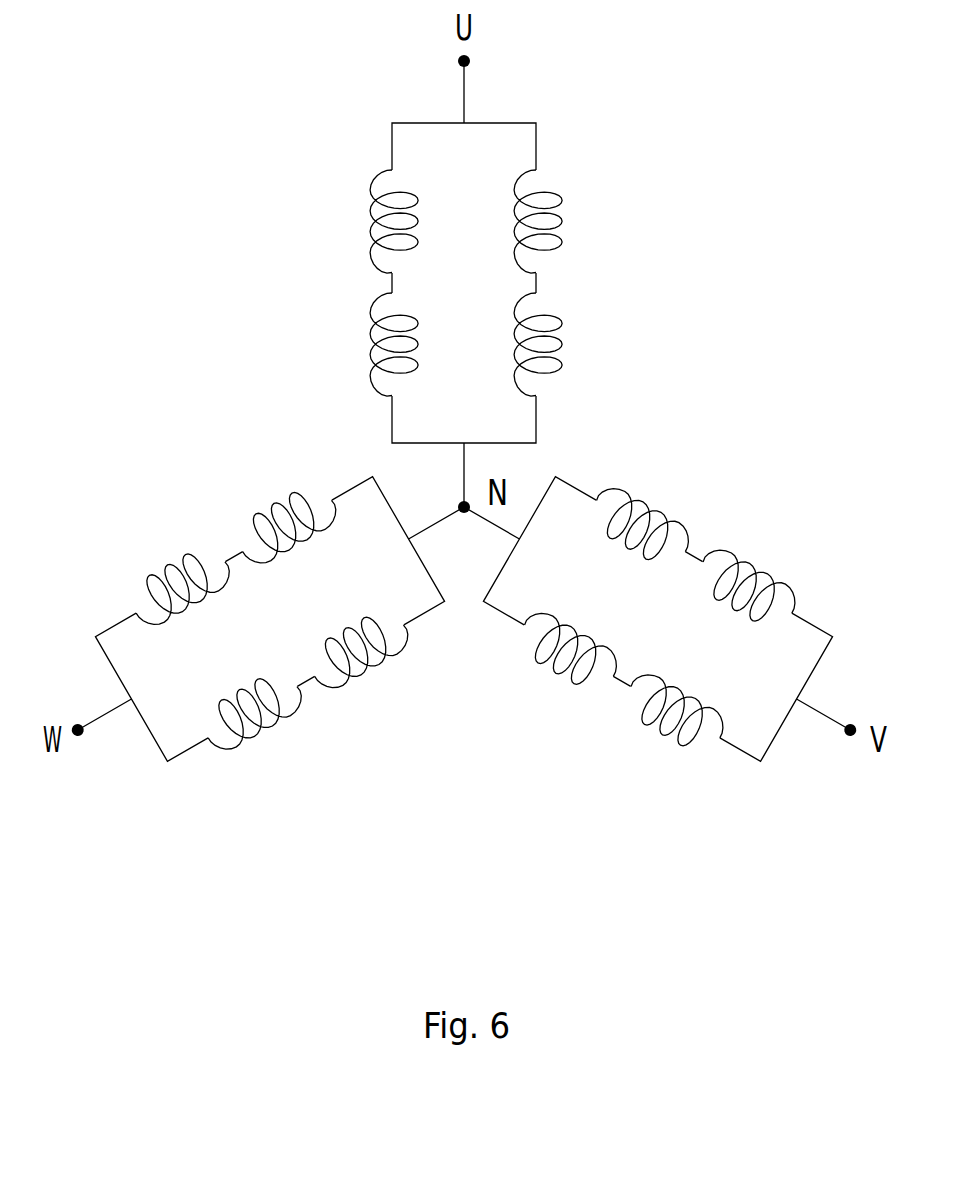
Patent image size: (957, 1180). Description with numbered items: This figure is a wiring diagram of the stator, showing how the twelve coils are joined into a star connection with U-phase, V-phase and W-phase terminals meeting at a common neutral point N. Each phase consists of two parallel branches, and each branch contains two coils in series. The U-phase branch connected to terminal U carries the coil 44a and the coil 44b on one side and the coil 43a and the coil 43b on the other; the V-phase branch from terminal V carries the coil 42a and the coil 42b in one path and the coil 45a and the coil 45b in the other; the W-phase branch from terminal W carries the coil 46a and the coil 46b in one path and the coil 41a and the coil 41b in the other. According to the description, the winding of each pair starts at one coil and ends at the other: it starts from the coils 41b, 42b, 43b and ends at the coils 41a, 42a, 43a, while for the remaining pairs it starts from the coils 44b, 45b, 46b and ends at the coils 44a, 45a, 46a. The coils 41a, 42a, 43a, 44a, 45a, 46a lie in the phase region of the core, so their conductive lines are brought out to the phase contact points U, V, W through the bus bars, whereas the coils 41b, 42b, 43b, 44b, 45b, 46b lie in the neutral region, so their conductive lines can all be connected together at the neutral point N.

The right coil of first coil pair 41a is at (272, 732).
The left coil of first coil pair 41b is at (377, 667).
The right coil of second coil pair 42a is at (760, 572).
The left coil of second coil pair 42b is at (657, 508).
The right coil of third coil pair 43a is at (560, 201).
The left coil of third coil pair 43b is at (558, 321).
The left coil of fourth coil pair 44a is at (370, 204).
The right coil of fourth coil pair 44b is at (370, 323).
The left coil of fifth coil pair 45a is at (663, 735).
The right coil of fifth coil pair 45b is at (558, 675).
The left coil of sixth coil pair 46a is at (170, 570).
The right coil of sixth coil pair 46b is at (278, 503).